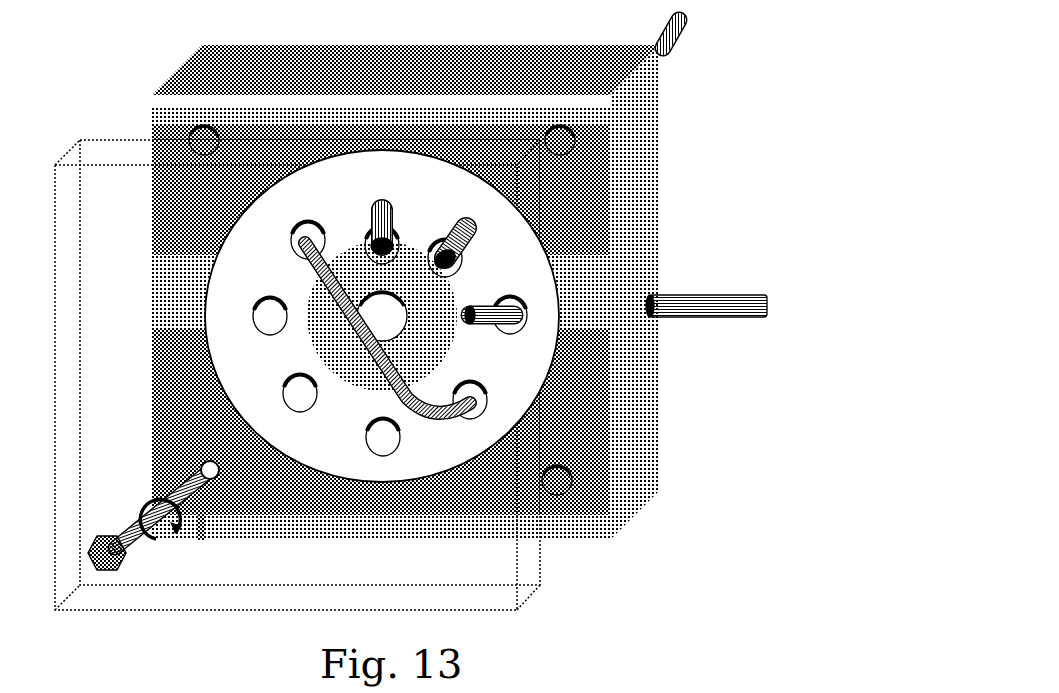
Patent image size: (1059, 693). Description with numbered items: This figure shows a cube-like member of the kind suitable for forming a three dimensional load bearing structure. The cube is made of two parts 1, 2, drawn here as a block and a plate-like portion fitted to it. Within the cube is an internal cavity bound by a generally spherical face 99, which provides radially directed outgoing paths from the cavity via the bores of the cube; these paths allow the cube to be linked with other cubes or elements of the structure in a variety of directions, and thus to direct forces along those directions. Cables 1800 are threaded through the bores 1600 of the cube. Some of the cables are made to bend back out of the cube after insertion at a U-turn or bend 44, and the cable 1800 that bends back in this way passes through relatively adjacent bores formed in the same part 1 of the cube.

The part 1 is at (178, 127).
The part 2 is at (101, 205).
The spherical face 99 is at (253, 371).
The U-turn or bend 44 is at (294, 288).
The bore 1600 is at (520, 305).
The cable 1800 is at (712, 297).